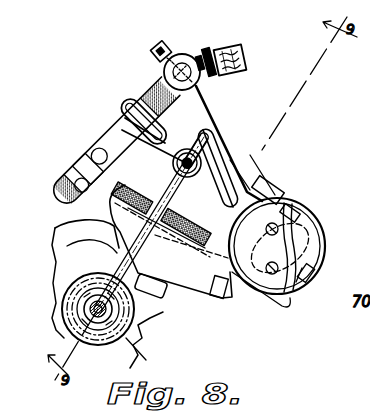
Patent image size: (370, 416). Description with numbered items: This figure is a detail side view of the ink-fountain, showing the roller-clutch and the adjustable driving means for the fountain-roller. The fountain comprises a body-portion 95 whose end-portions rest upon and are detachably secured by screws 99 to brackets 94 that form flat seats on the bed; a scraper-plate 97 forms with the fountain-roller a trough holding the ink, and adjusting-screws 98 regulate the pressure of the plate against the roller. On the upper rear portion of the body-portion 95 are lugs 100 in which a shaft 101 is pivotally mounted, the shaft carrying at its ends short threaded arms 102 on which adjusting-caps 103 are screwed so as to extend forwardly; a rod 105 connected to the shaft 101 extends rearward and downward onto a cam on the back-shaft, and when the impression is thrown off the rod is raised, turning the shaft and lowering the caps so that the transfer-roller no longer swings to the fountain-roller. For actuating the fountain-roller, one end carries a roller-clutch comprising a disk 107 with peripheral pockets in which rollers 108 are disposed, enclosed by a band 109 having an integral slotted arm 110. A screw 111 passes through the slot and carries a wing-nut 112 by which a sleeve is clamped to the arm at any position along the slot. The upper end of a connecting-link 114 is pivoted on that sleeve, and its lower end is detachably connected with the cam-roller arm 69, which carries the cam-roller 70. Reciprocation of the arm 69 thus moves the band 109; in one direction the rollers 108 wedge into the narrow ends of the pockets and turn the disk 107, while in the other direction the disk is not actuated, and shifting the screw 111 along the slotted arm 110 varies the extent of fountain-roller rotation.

The cam-roller arm 69 is at (143, 343).
The cam-roller 70 is at (99, 320).
The bracket 94 is at (85, 279).
The body-portion 95 is at (225, 290).
The scraper-plate 97 is at (202, 257).
The adjusting-screw 98 is at (110, 188).
The screw 99 is at (162, 293).
The lug 100 is at (206, 101).
The shaft 101 is at (164, 74).
The threaded arm 102 is at (204, 52).
The adjusting-cap 103 is at (242, 45).
The rod 105 is at (115, 132).
The disk 107 is at (300, 227).
The roller 108 is at (289, 210).
The band 109 is at (303, 278).
The slotted arm 110 is at (123, 103).
The screw 111 is at (200, 153).
The wing-nut 112 is at (190, 141).
The connecting-link 114 is at (145, 247).